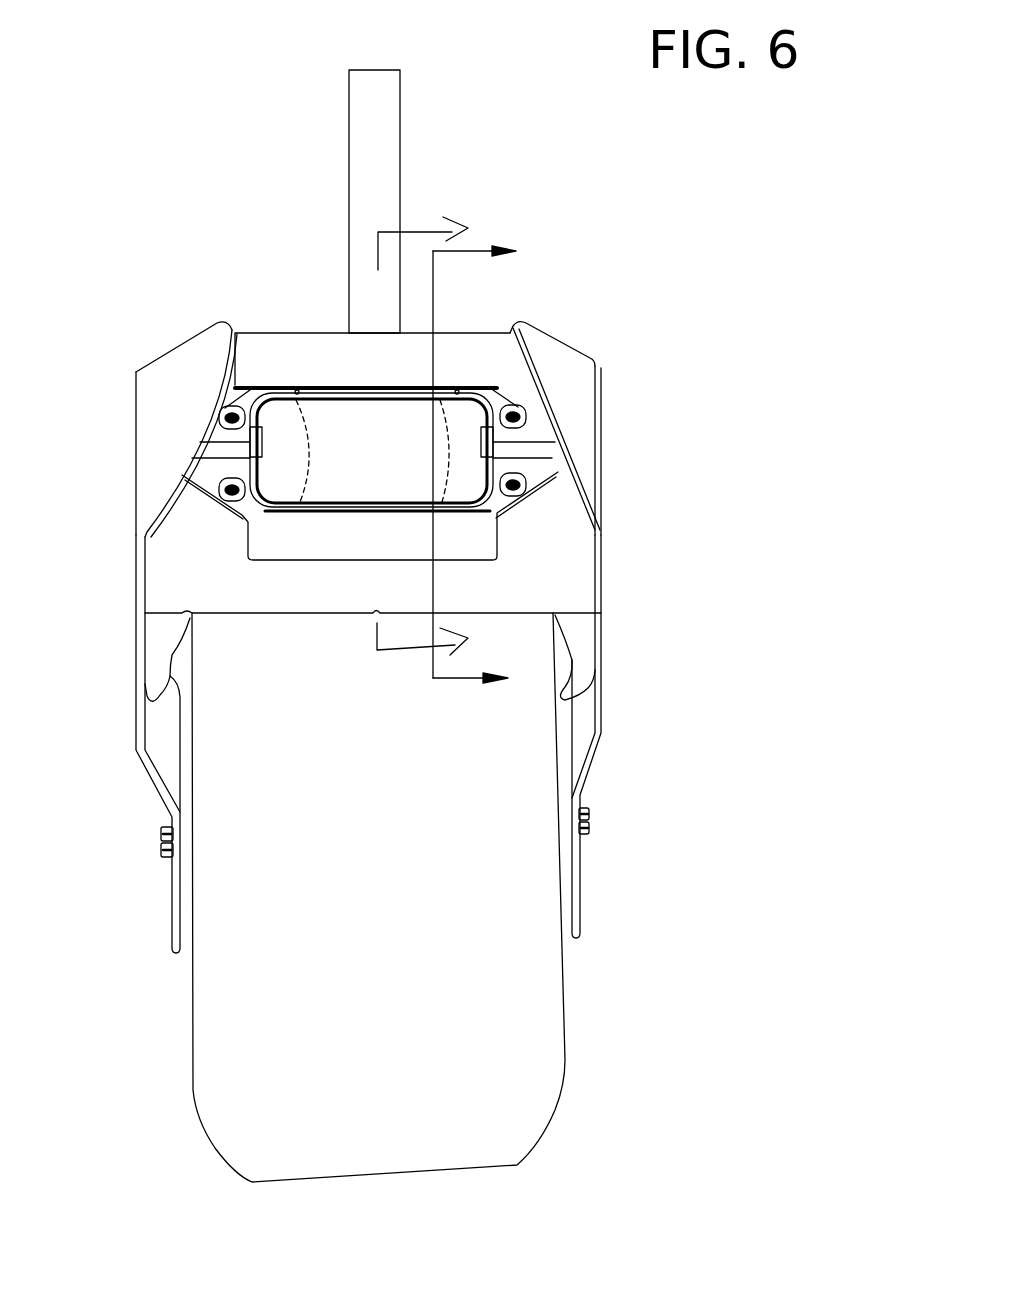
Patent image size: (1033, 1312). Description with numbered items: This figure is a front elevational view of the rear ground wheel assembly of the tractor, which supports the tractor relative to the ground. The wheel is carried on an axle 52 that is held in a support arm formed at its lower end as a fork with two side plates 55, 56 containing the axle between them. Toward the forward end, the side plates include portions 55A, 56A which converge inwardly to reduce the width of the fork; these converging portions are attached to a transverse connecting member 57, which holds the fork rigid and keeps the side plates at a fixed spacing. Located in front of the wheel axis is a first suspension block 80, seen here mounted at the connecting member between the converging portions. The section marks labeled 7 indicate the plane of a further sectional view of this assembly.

The section line / shaft 7 is at (432, 404).
The axle 52 is at (590, 818).
The side plate 55 is at (600, 698).
The converging portion 55A is at (589, 352).
The side plate 56 is at (134, 750).
The converging portion 56A is at (197, 342).
The transverse connecting member 57 is at (326, 358).
The first suspension block 80 is at (356, 488).